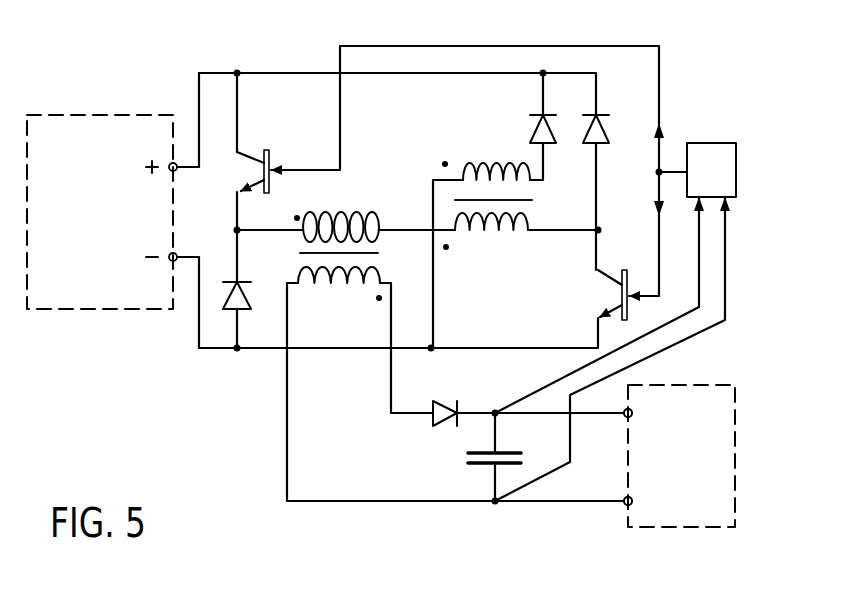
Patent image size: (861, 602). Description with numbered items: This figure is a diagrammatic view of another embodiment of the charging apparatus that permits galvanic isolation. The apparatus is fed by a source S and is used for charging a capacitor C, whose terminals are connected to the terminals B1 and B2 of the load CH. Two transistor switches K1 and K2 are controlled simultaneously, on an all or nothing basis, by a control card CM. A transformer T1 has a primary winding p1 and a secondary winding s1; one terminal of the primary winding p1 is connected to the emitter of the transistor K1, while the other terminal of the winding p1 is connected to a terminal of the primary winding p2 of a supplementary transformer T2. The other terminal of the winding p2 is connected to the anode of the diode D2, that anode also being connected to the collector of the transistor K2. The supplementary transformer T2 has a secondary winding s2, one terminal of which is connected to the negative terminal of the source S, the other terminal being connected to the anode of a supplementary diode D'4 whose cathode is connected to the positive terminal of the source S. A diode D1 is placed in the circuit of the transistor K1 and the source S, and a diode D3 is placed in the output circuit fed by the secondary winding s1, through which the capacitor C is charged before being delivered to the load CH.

The source S is at (97, 310).
The switch K1 is at (278, 150).
The primary winding p1 is at (343, 214).
The transformer T1 is at (367, 212).
The secondary winding s1 is at (360, 293).
The diode D1 is at (228, 300).
The supplementary transformer T2 is at (463, 148).
The secondary winding s2 is at (503, 165).
The primary winding p2 is at (482, 236).
The supplementary diode D'4 is at (541, 77).
The diode D2 is at (610, 135).
The card CM is at (708, 150).
The switch K2 is at (611, 298).
The diode D3 is at (445, 420).
The capacitor C is at (470, 465).
The terminal of the load B1 is at (650, 416).
The terminal of the load B2 is at (650, 505).
The load CH is at (635, 527).